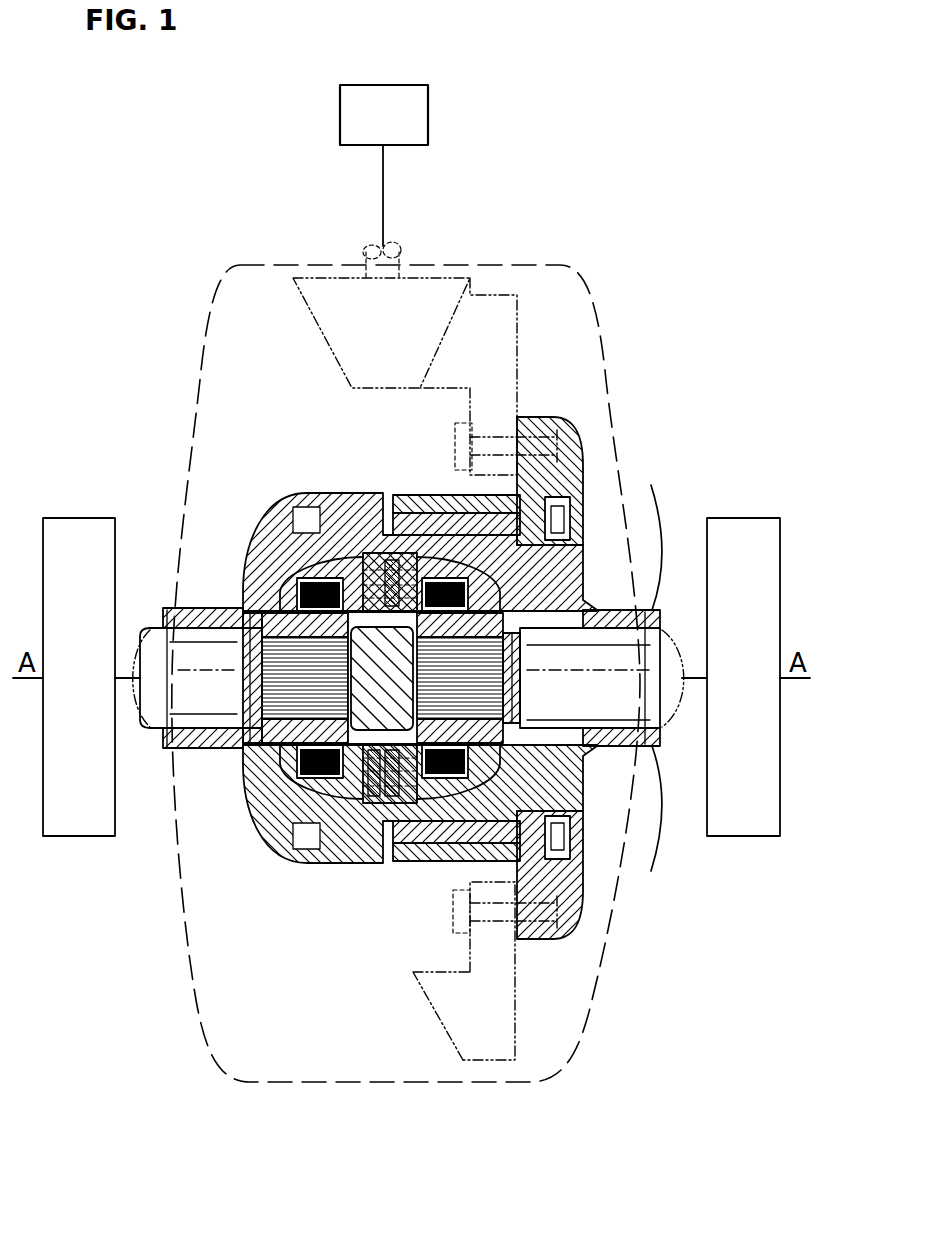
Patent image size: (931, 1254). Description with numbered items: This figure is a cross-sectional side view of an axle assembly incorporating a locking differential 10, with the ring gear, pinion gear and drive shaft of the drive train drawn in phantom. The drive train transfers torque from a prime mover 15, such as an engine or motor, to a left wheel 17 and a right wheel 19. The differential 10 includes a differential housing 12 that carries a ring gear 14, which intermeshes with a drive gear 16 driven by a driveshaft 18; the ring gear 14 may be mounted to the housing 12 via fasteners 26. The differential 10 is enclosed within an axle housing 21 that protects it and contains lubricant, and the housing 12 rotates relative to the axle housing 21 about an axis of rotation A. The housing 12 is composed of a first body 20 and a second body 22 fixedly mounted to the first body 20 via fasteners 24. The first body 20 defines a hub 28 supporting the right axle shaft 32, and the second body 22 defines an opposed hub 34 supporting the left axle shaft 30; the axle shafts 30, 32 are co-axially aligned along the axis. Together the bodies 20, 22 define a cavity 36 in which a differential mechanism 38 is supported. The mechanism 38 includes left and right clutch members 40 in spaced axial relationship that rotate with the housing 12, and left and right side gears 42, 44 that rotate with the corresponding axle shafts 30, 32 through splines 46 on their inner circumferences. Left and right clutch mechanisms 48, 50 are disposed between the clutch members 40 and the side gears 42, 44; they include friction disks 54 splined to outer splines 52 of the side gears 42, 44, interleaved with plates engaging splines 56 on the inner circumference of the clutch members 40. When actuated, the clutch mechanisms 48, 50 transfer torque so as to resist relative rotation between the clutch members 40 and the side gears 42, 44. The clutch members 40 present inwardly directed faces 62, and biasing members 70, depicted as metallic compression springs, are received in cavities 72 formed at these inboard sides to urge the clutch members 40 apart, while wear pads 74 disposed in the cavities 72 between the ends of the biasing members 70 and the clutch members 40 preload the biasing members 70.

The locking differential 10 is at (279, 447).
The differential housing 12 is at (238, 550).
The ring gear 14 is at (517, 331).
The prime mover 15 is at (429, 108).
The drive gear 16 is at (320, 310).
The left wheel 17 is at (75, 517).
The driveshaft 18 is at (388, 253).
The right wheel 19 is at (731, 517).
The first body 20 is at (567, 574).
The axle housing 21 is at (207, 324).
The second body 22 is at (232, 592).
The fasteners 24 is at (518, 515).
The fasteners 26 is at (457, 440).
The hub 28 is at (651, 665).
The left axle shaft 30 is at (152, 626).
The right axle shaft 32 is at (675, 632).
The opposed hub 34 is at (185, 742).
The cavity 36 is at (457, 572).
The differential mechanism 38 is at (449, 802).
The clutch members 40 is at (312, 785).
The left side gear 42 is at (262, 745).
The right side gear 44 is at (490, 728).
The splines 46 is at (285, 700).
The left clutch mechanism 48 is at (290, 587).
The right clutch mechanism 50 is at (478, 580).
The splines 52 is at (458, 612).
The friction disks 54 is at (472, 782).
The splines 56 is at (493, 537).
The inwardly directed faces 62 is at (346, 797).
The biasing members 70 is at (397, 797).
The cavities 72 is at (368, 797).
The wear pads 74 is at (375, 582).